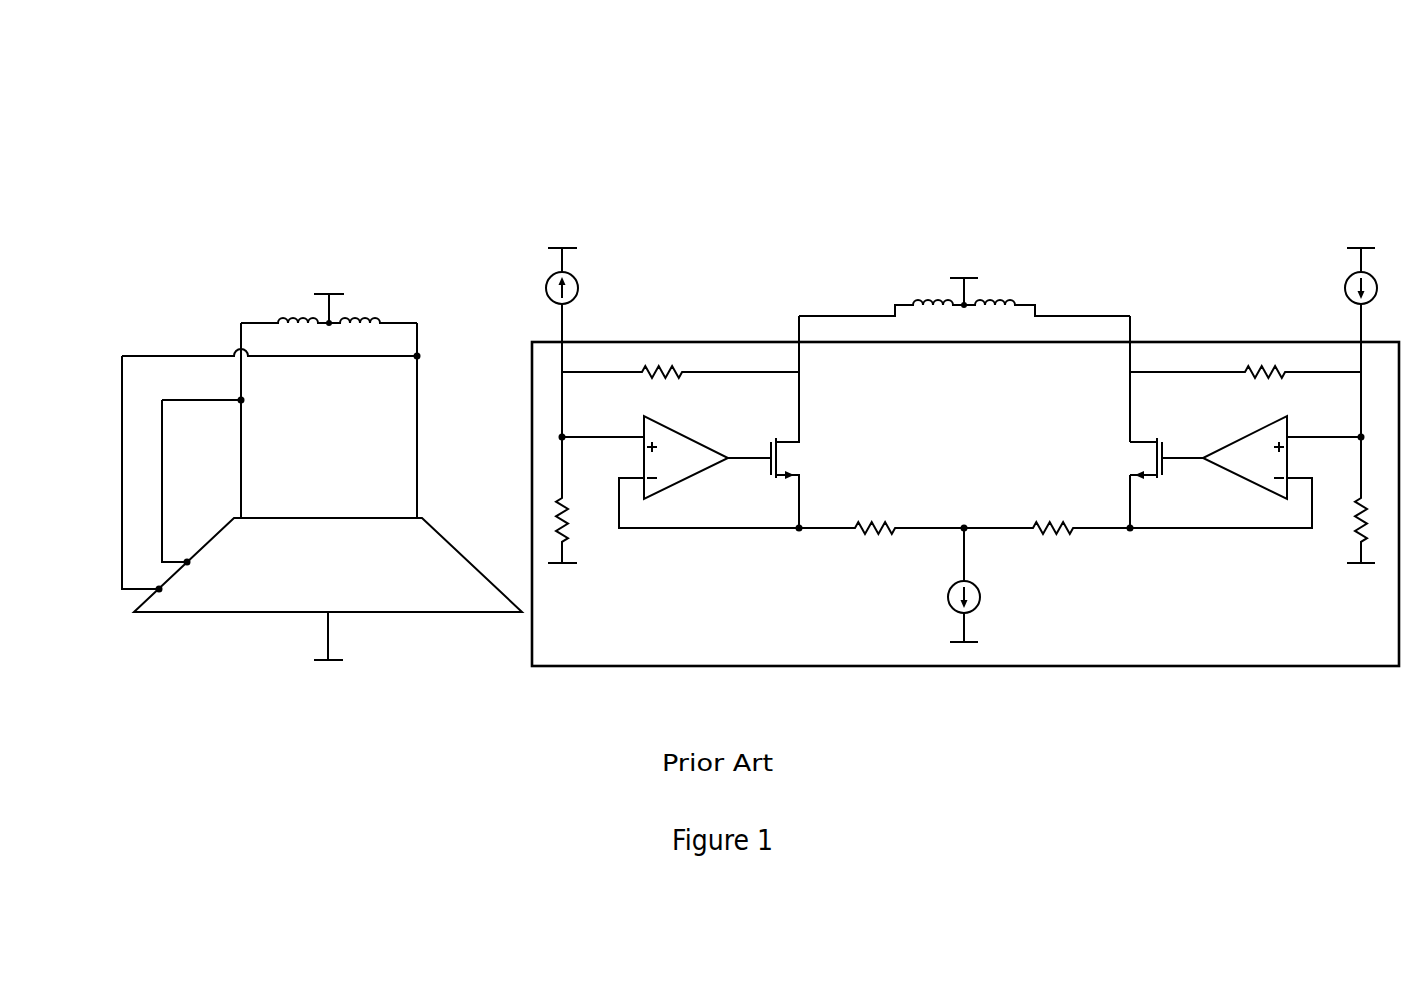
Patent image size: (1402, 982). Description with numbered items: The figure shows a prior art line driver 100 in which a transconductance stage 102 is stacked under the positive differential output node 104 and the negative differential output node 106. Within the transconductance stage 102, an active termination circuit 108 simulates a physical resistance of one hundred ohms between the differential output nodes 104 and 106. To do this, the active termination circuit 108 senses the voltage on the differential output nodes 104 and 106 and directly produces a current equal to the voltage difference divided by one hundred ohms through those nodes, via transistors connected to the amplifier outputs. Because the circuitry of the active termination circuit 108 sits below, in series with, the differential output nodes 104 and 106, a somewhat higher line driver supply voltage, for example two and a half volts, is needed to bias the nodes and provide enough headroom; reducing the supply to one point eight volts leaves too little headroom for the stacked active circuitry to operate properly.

The prior art line driver 100 is at (226, 114).
The transconductance stage 102 is at (292, 518).
The differential output node tdp 104 is at (241, 322).
The differential output node tdn 106 is at (417, 322).
The active termination circuit 108 is at (573, 649).